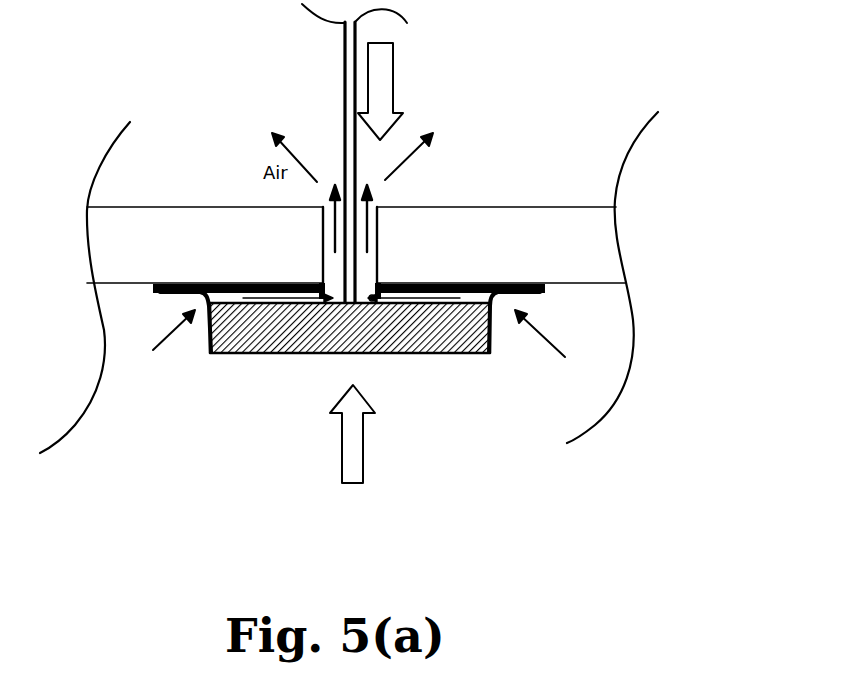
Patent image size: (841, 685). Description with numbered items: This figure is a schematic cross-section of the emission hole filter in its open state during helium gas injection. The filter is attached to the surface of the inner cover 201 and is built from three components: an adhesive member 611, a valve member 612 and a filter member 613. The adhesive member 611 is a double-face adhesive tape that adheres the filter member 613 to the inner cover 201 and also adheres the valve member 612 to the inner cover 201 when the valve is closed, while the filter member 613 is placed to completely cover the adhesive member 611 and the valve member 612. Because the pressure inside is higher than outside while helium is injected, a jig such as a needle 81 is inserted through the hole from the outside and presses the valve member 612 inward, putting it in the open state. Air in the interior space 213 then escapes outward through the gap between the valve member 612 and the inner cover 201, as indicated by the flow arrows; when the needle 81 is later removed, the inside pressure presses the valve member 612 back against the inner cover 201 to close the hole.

The needle 81 is at (343, 72).
The inner cover 201 is at (516, 207).
The adhesive member 611 is at (475, 353).
The valve member 612 is at (408, 353).
The filter member 613 is at (203, 328).
The interior space 213 is at (325, 545).